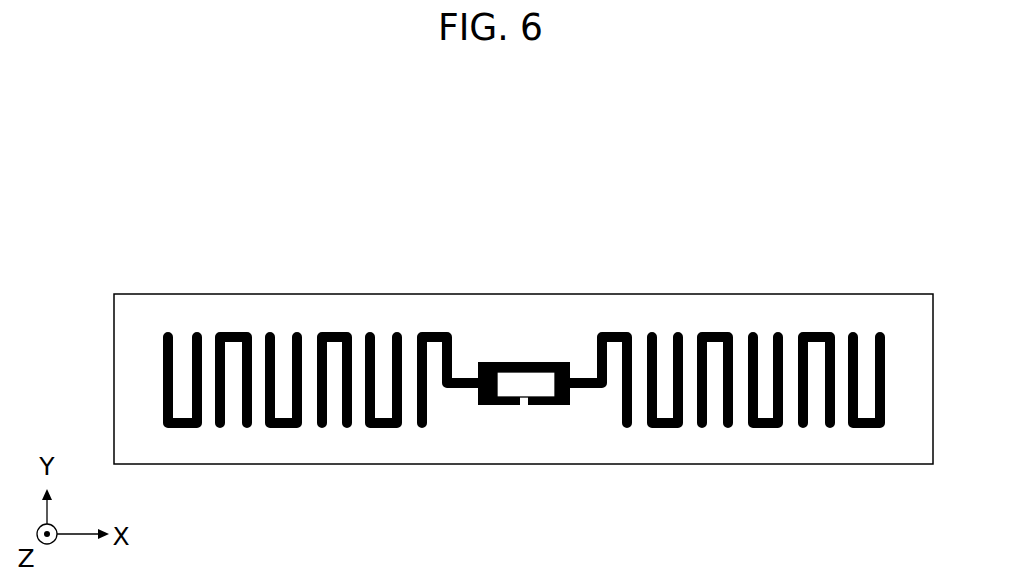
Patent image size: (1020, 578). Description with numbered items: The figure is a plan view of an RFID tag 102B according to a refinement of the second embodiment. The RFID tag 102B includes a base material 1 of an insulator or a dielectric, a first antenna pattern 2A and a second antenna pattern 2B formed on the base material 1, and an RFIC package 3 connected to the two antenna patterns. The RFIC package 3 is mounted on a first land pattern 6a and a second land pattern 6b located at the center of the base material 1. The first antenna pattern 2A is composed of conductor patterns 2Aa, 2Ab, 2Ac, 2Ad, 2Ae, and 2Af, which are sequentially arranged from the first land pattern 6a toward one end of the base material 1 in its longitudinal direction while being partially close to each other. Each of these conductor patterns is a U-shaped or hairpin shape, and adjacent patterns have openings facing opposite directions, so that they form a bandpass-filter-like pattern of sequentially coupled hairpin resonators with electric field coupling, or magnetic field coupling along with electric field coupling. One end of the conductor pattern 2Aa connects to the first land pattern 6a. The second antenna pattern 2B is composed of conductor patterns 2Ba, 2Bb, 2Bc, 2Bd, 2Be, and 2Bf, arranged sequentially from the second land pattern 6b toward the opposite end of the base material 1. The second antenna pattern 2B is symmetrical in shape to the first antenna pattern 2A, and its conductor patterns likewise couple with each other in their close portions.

The RFID tag 102B is at (655, 144).
The base material 1 is at (545, 312).
The first antenna pattern 2A is at (155, 253).
The conductor pattern 2Aa is at (437, 332).
The conductor pattern 2Ab is at (383, 428).
The conductor pattern 2Ac is at (337, 332).
The conductor pattern 2Ad is at (283, 428).
The conductor pattern 2Ae is at (236, 332).
The conductor pattern 2Af is at (185, 428).
The second antenna pattern 2B is at (890, 253).
The conductor pattern 2Ba is at (612, 332).
The conductor pattern 2Bb is at (670, 428).
The conductor pattern 2Bc is at (715, 332).
The conductor pattern 2Bd is at (772, 428).
The conductor pattern 2Be is at (817, 332).
The conductor pattern 2Bf is at (872, 428).
The RFIC package 3 is at (526, 380).
The first land pattern 6a is at (482, 405).
The second land pattern 6b is at (562, 362).